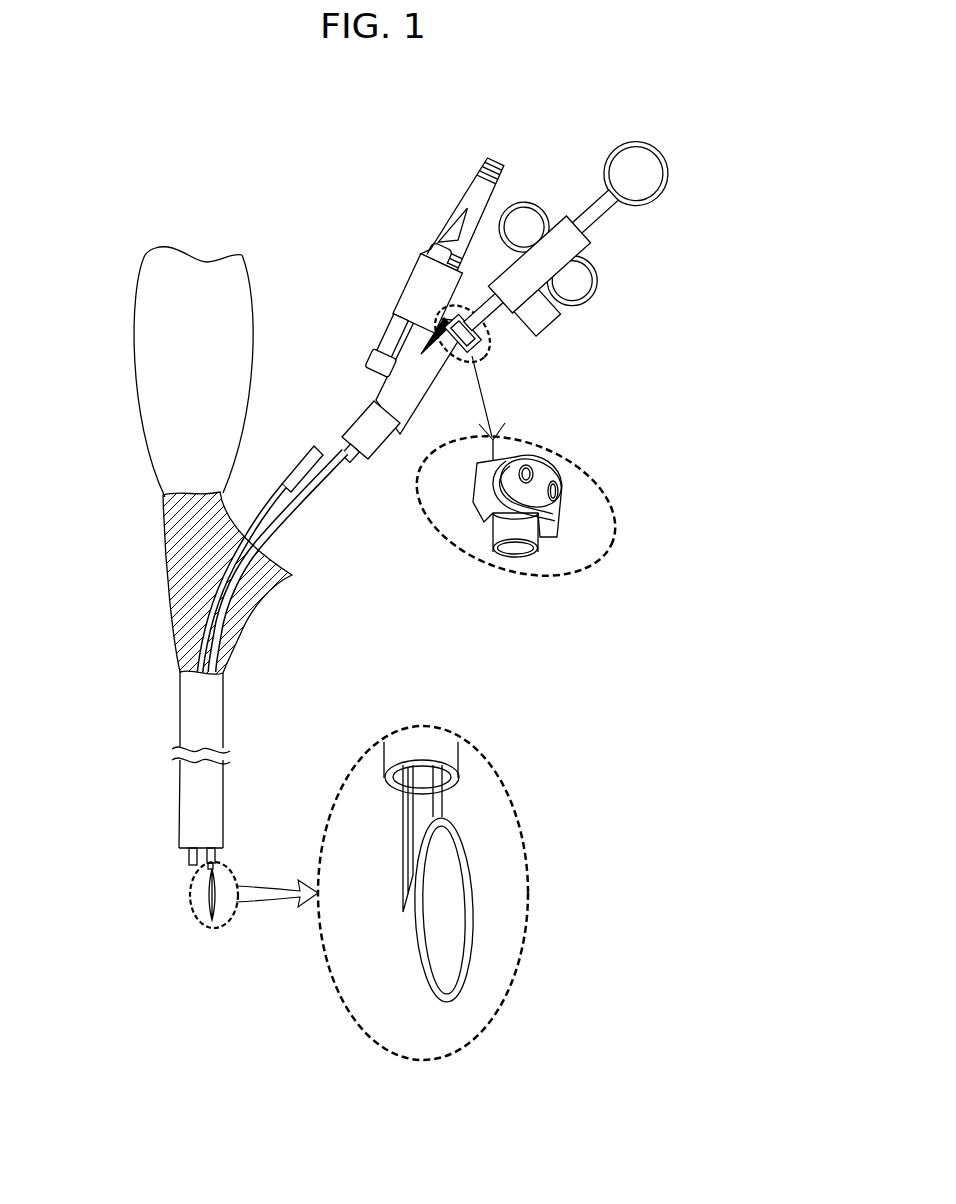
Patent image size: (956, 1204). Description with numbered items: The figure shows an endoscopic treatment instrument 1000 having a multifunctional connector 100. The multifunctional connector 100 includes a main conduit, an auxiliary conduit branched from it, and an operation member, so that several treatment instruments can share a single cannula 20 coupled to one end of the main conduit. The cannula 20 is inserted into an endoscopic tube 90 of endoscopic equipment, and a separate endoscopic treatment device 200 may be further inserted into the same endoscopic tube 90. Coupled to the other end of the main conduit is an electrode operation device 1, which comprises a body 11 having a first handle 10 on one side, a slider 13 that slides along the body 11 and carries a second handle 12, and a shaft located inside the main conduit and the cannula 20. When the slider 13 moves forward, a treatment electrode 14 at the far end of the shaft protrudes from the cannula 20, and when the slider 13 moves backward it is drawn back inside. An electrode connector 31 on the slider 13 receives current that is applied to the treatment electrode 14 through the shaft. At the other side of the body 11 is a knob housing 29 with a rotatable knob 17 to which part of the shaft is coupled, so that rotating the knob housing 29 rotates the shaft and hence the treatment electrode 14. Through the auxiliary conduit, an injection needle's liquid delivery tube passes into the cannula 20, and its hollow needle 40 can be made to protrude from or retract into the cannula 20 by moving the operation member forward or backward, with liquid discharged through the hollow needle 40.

The endoscopic treatment instrument 1000 is at (72, 148).
The electrode operation device 1 is at (596, 256).
The first handle 10 is at (667, 192).
The body 11 is at (490, 318).
The second handle 12 is at (582, 304).
The slider 13 is at (577, 247).
The electrode connector 31 is at (545, 323).
The multifunctional connector 100 is at (370, 482).
The endoscopic treatment device 200 is at (307, 455).
The cannula 20 is at (320, 470).
The knob 17 is at (540, 460).
The knob housing 29 is at (480, 493).
The endoscopic tube 90 is at (190, 801).
The hollow needle 40 is at (406, 849).
The treatment electrode 14 is at (465, 903).